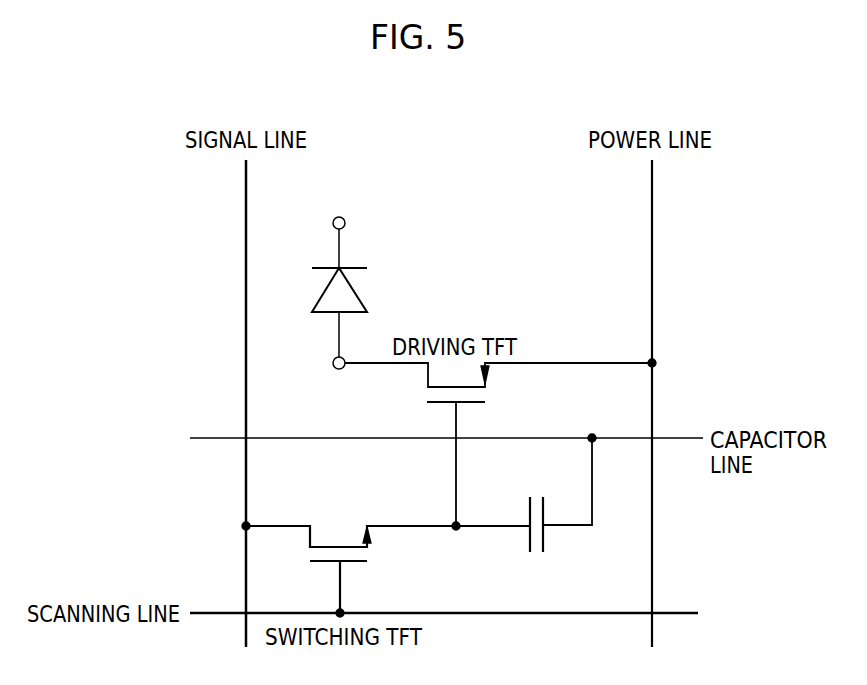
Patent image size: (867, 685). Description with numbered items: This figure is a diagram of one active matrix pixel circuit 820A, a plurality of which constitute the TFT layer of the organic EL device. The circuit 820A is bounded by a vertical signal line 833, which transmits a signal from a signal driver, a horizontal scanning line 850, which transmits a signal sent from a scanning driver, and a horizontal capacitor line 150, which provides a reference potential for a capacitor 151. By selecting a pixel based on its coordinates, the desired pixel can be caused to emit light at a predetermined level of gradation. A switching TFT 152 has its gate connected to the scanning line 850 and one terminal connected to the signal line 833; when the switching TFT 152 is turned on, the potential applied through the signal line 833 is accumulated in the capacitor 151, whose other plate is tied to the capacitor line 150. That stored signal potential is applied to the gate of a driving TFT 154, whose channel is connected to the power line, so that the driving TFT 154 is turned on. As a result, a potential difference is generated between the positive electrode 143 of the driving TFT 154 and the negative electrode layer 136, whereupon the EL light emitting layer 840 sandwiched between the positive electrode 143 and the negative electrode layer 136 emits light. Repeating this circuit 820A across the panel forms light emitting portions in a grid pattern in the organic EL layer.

The negative electrode layer 136 is at (346, 220).
The positive electrode 143 is at (335, 368).
The EL light emitting layer 840 is at (360, 293).
The signal line 833 is at (246, 258).
The scanning line layer 850 is at (507, 614).
The capacitor line 150 is at (697, 438).
The capacitor 151 is at (546, 551).
The switching TFT 152 is at (369, 553).
The driving TFT 154 is at (487, 397).
The circuit 820A is at (681, 276).